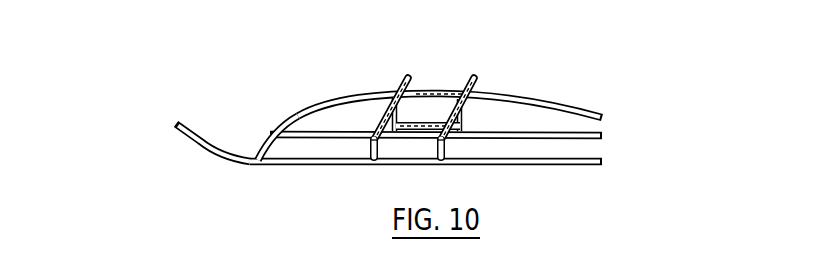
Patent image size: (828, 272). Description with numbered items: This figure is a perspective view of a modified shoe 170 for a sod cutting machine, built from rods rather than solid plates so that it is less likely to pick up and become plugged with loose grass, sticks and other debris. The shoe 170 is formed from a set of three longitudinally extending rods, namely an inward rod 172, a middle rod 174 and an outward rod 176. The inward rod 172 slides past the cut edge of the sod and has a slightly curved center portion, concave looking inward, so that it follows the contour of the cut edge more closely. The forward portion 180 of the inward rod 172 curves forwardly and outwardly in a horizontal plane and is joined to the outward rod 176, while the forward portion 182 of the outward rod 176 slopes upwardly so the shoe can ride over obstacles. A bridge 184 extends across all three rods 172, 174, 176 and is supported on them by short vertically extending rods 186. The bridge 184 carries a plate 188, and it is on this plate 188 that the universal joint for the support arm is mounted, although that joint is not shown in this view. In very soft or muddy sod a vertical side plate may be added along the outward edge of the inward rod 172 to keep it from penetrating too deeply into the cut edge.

The shoe 170 is at (408, 111).
The inward rod 172 is at (603, 117).
The rod 174 is at (603, 136).
The outward rod 176 is at (603, 162).
The forward portion of inward rod 180 is at (289, 115).
The forward portion of outward rod 182 is at (191, 139).
The bridge 184 is at (398, 76).
The short vertically extending rods 186 is at (369, 152).
The plate 188 is at (441, 92).